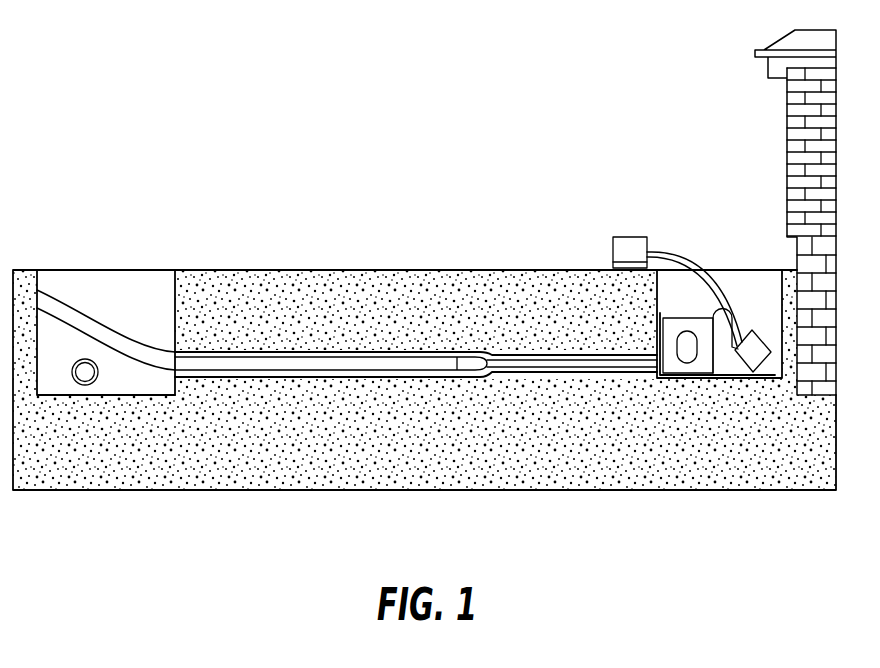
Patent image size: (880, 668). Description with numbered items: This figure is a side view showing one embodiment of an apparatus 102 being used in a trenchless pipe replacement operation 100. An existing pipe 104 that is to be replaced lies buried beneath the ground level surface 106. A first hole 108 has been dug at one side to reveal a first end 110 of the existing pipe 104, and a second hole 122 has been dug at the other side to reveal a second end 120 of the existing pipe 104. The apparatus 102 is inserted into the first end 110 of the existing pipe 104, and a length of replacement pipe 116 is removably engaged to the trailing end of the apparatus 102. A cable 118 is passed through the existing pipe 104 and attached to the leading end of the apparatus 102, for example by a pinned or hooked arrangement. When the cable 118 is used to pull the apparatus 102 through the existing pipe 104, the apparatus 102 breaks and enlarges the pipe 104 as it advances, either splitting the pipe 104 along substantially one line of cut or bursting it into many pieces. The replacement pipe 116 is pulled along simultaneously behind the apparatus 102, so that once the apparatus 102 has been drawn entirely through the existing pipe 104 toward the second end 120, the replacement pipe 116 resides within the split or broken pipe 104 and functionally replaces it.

The trenchless pipe replacement operation 100 is at (107, 78).
The apparatus 102 is at (472, 362).
The existing pipe 104 is at (566, 355).
The ground level surface 106 is at (357, 269).
The first hole 108 is at (37, 268).
The first end 110 is at (174, 377).
The replacement pipe 116 is at (125, 345).
The cable 118 is at (521, 362).
The second end 120 is at (665, 363).
The second hole 122 is at (657, 266).